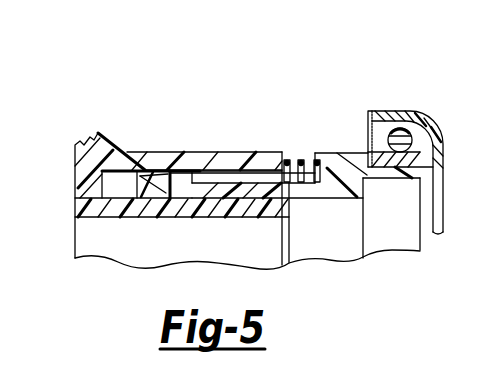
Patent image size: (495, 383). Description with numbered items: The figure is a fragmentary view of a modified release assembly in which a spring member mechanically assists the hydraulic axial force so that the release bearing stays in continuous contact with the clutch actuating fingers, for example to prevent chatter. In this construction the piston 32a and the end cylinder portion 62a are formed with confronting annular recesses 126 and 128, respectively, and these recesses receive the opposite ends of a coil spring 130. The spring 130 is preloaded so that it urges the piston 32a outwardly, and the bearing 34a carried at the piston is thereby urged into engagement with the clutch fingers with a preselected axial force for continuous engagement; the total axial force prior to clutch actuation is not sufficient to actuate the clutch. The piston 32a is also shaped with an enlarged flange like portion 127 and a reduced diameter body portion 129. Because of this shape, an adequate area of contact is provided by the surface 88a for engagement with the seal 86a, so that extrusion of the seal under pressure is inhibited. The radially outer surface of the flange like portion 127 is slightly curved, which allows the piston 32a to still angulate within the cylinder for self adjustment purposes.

The surface 88a is at (145, 176).
The end cylinder portion 62a is at (157, 157).
The enlarged flange like portion 127 is at (187, 172).
The annular recess 128 is at (287, 159).
The coil spring 130 is at (302, 159).
The reduced diameter body portion 129 is at (255, 179).
The annular recess 126 is at (312, 184).
The seal 86a is at (150, 190).
The piston 32a is at (333, 204).
The bearing 34a is at (458, 66).